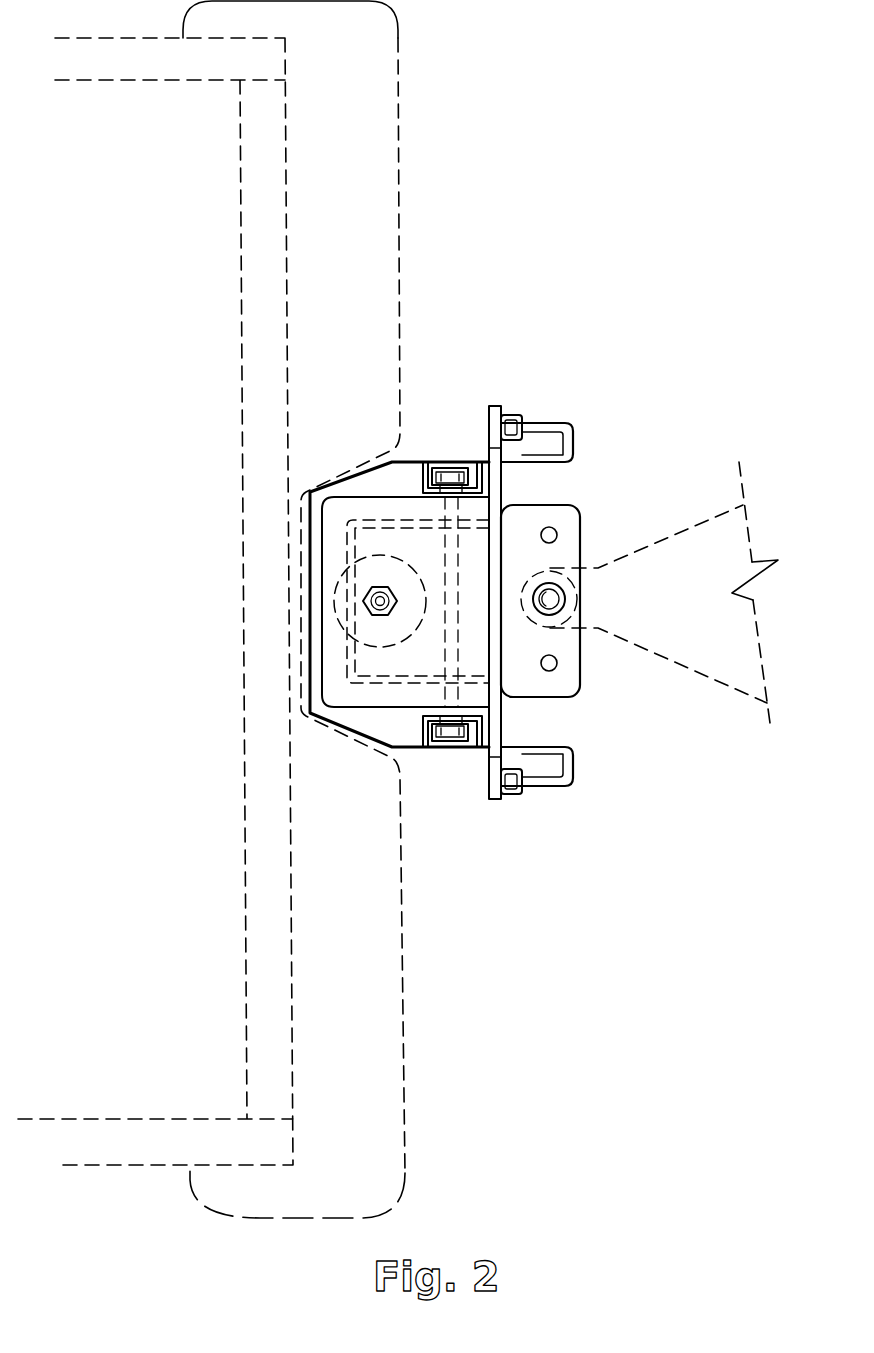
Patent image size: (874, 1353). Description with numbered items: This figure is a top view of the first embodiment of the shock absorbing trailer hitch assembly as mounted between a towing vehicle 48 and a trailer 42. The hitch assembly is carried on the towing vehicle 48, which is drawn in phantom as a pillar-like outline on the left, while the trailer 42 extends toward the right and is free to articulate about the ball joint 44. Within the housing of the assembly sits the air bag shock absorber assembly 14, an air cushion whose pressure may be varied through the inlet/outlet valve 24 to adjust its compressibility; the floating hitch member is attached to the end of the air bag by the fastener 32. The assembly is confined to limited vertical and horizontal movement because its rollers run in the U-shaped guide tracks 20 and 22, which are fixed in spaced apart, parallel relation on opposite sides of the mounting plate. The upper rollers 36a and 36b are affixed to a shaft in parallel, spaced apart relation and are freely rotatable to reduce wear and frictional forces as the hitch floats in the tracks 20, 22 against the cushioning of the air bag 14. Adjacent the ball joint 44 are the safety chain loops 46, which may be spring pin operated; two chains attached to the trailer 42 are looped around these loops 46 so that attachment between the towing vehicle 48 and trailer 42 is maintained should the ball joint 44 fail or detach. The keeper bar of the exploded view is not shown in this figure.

The air bag shock absorber assembly 14 is at (358, 628).
The guide track 20 is at (430, 732).
The guide track 22 is at (424, 478).
The inlet/outlet valve 24 is at (368, 595).
The fastener 32 is at (393, 595).
The upper roller 36a is at (457, 742).
The upper roller 36b is at (449, 474).
The trailer 42 is at (702, 548).
The ball joint 44 is at (565, 600).
The safety chain loops 46 is at (575, 440).
The towing vehicle 48 is at (230, 318).